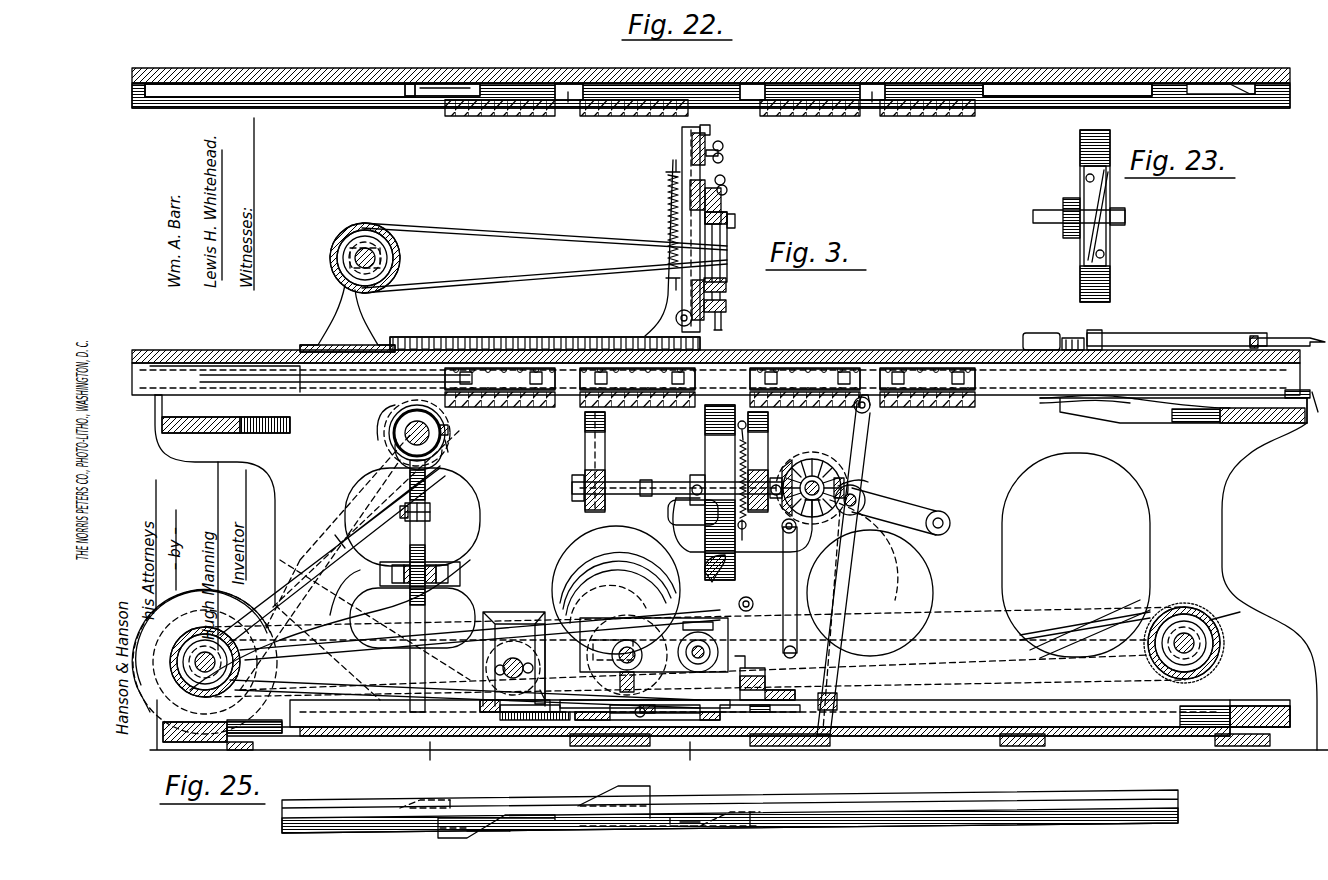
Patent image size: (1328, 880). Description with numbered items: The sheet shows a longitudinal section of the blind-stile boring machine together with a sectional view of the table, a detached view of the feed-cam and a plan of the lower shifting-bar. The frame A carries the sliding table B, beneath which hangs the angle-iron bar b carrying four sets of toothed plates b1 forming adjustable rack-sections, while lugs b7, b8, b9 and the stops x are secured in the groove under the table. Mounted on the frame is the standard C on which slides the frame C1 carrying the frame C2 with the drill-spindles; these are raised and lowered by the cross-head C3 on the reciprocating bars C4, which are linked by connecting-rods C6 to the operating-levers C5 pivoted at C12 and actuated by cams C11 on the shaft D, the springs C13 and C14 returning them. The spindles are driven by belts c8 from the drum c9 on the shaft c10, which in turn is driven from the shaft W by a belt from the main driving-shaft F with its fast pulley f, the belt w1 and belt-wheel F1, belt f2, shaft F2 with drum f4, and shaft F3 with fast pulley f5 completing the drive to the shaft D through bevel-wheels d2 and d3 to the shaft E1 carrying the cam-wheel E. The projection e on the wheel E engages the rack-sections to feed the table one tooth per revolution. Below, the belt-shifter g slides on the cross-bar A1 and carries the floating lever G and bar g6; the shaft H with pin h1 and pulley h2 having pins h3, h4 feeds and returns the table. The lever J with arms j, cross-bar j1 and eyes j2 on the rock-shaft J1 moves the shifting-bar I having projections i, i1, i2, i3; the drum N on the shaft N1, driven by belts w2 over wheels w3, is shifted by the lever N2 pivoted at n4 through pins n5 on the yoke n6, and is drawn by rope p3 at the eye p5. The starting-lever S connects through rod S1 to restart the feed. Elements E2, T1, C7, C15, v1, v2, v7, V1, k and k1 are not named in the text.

In FIG. 22, the sliding table B is at (372, 60).
In FIG. 3, the sliding table B is at (208, 346).
In FIG. 22, the bar b is at (384, 98).
In FIG. 3, the bar b is at (196, 381).
In FIG. 22, the toothed plate b1 is at (710, 104).
In FIG. 3, the toothed plate b1 is at (928, 323).
In FIG. 22, the lug b7 is at (572, 84).
In FIG. 22, the lug b8 is at (1080, 82).
In FIG. 22, the lug b9 is at (268, 85).
In FIG. 22, the stop x is at (458, 82).
In FIG. 23, the cam-wheel E is at (1082, 162).
In FIG. 3, the cam-wheel E is at (736, 492).
In FIG. 3, the shaft E1 is at (642, 486).
In FIG. 23, the hub E2 is at (1060, 228).
In FIG. 23, the projection e is at (1104, 230).
In FIG. 3, the projection e is at (729, 583).
In FIG. 3, the pedestal T1 is at (347, 318).
In FIG. 3, the shaft c10 is at (330, 252).
In FIG. 3, the drum c9 is at (392, 252).
In FIG. 3, the belt c8 is at (532, 272).
In FIG. 3, the standard C is at (691, 229).
In FIG. 3, the frame C1 is at (728, 218).
In FIG. 3, the frame C2 is at (724, 320).
In FIG. 3, the cross-head C3 is at (684, 140).
In FIG. 3, the vertically-reciprocating bar C4 is at (727, 190).
In FIG. 3, the operating-lever C5 is at (708, 134).
In FIG. 3, the connecting-rod C6 is at (724, 152).
In FIG. 3, the block C7 is at (727, 298).
In FIG. 3, the cam C11 is at (806, 588).
In FIG. 3, the pivot C12 is at (725, 180).
In FIG. 3, the spring C13 is at (729, 480).
In FIG. 3, the spring C14 is at (668, 186).
In FIG. 3, the bracket C15 is at (672, 528).
In FIG. 3, the block v1 is at (1044, 336).
In FIG. 3, the block v2 is at (1074, 340).
In FIG. 3, the bar v7 is at (1226, 334).
In FIG. 3, the lever V1 is at (1284, 338).
In FIG. 3, the starting-lever S is at (1302, 416).
In FIG. 3, the rod S1 is at (1135, 405).
In FIG. 3, the frame A is at (739, 572).
In FIG. 3, the cross-bar A1 is at (765, 677).
In FIG. 3, the drum N is at (402, 436).
In FIG. 3, the shaft N1 is at (390, 428).
In FIG. 3, the lever N2 is at (405, 586).
In FIG. 3, the pivot n4 is at (440, 562).
In FIG. 3, the pin n5 is at (448, 436).
In FIG. 3, the yoke n6 is at (446, 454).
In FIG. 3, the rope p3 is at (402, 518).
In FIG. 3, the eye p5 is at (432, 514).
In FIG. 3, the belt w1 is at (350, 596).
In FIG. 3, the belt w2 is at (351, 540).
In FIG. 3, the wheel w3 is at (332, 555).
In FIG. 3, the shaft W is at (204, 662).
In FIG. 3, the pin h1 is at (508, 625).
In FIG. 3, the pulley h2 is at (534, 625).
In FIG. 3, the pin h3 is at (540, 695).
In FIG. 3, the pin h4 is at (534, 683).
In FIG. 3, the shaft H is at (513, 668).
In FIG. 3, the belt-shifter g is at (572, 700).
In FIG. 3, the floating lever G is at (515, 712).
In FIG. 3, the bar g6 is at (650, 710).
In FIG. 3, the main driving-shaft F is at (654, 655).
In FIG. 3, the belt-wheel F1 is at (608, 592).
In FIG. 3, the shaft F2 is at (1183, 636).
In FIG. 3, the shaft F3 is at (714, 652).
In FIG. 3, the fast pulley f is at (1036, 622).
In FIG. 3, the belt f2 is at (1070, 646).
In FIG. 3, the drum f4 is at (1226, 613).
In FIG. 3, the fast pulley f5 is at (698, 617).
In FIG. 3, the bar k is at (776, 712).
In FIG. 3, the bar k1 is at (655, 717).
In FIG. 3, the shaft D is at (814, 462).
In FIG. 3, the bevel-wheel d2 is at (836, 476).
In FIG. 3, the bevel-wheel d3 is at (786, 462).
In FIG. 3, the arm j is at (864, 452).
In FIG. 3, the cross-bar j1 is at (874, 440).
In FIG. 3, the eye j2 is at (854, 408).
In FIG. 3, the lever J is at (870, 578).
In FIG. 3, the rock-shaft J1 is at (859, 475).
In FIG. 3, the shifting-bar I is at (1018, 702).
In FIG. 25, the shifting-bar I is at (876, 800).
In FIG. 3, the projection i is at (688, 759).
In FIG. 25, the projection i is at (688, 830).
In FIG. 25, the projection i1 is at (648, 792).
In FIG. 3, the projection i2 is at (438, 757).
In FIG. 25, the projection i2 is at (470, 838).
In FIG. 25, the projection i3 is at (428, 800).